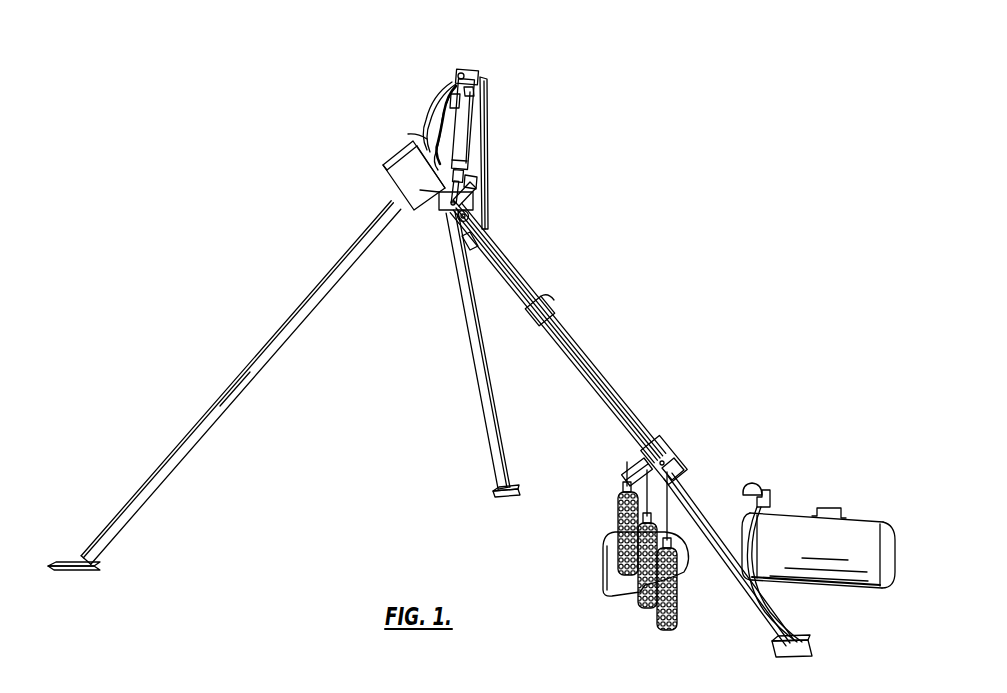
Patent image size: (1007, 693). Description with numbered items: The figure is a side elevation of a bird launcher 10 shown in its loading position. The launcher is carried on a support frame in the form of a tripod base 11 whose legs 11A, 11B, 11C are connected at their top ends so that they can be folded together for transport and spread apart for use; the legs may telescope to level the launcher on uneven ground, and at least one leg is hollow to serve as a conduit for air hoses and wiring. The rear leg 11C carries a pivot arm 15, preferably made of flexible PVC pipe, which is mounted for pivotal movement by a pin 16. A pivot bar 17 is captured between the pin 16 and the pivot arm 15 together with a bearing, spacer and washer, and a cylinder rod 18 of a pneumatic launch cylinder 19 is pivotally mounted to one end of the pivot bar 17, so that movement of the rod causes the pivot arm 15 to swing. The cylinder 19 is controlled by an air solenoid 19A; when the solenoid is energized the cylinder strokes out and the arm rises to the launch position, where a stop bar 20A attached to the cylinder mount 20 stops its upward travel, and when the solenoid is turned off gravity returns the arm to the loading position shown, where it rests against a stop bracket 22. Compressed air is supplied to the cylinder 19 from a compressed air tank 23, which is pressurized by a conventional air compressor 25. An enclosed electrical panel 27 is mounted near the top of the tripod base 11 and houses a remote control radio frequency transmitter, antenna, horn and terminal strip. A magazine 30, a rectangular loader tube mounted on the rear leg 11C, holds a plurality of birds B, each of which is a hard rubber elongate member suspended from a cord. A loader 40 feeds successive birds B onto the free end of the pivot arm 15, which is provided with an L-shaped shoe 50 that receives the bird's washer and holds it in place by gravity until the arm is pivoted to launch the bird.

The bird launcher 10 is at (250, 205).
The tripod base 11 is at (170, 452).
The leg 11A is at (237, 393).
The leg 11B is at (480, 397).
The rear leg 11C is at (700, 508).
The pivot arm 15 is at (552, 305).
The pin 16 is at (483, 240).
The pivot bar 17 is at (452, 208).
The cylinder rod 18 is at (478, 190).
The pneumatic launch cylinder 19 is at (468, 122).
The air solenoid 19A is at (455, 80).
The cylinder mount 20 is at (485, 137).
The stop bar 20A is at (478, 178).
The stop bracket 22 is at (646, 455).
The compressed air tank 23 is at (870, 568).
The air compressor 25 is at (630, 583).
The electrical panel 27 is at (402, 165).
The magazine 30 is at (600, 370).
The loader 40 is at (676, 458).
The L-shaped shoe 50 is at (620, 490).
The bird B is at (665, 632).